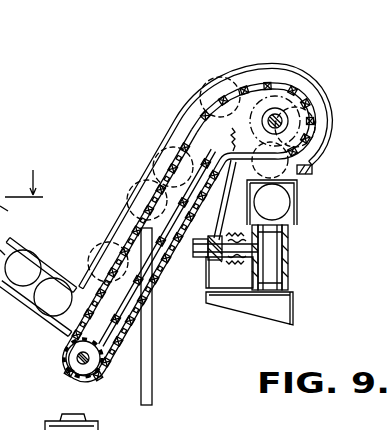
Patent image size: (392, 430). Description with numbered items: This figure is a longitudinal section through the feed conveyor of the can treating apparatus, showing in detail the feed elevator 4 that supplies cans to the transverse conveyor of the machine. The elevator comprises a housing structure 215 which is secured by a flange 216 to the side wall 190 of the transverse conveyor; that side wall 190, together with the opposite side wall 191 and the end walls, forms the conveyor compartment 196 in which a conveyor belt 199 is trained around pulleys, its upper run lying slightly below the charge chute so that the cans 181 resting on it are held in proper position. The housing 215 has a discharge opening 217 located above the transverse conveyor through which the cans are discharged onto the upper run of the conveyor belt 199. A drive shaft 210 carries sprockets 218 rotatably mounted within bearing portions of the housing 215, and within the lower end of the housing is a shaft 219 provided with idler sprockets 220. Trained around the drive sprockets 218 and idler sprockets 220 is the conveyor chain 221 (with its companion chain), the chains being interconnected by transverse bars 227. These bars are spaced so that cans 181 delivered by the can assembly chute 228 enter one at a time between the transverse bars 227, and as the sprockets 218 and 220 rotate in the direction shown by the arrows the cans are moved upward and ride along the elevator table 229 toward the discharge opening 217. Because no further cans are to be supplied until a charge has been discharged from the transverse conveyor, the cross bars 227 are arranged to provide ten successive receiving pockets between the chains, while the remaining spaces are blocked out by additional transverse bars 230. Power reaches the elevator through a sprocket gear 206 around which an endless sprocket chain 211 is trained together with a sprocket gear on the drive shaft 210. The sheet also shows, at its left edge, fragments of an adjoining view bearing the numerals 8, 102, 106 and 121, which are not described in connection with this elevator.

The feed elevator 4 is at (146, 158).
The section arrow 8 is at (25, 182).
The adjacent figure part 102 is at (8, 175).
The adjacent figure part 106 is at (16, 213).
The adjacent figure part 121 is at (12, 240).
The cans 181 is at (282, 203).
The side wall 190 is at (286, 218).
The side wall 191 is at (243, 276).
The conveyor compartment 196 is at (297, 213).
The conveyor belt 199 is at (289, 230).
The sprocket gear 206 is at (225, 241).
The drive shaft 210 is at (289, 118).
The endless sprocket chain 211 is at (231, 200).
The housing structure 215 is at (190, 101).
The flange 216 is at (298, 181).
The discharge opening 217 is at (280, 174).
The sprockets 218 is at (284, 85).
The shaft 219 is at (66, 364).
The idler sprockets 220 is at (77, 357).
The conveyor chain 221 is at (152, 317).
The transverse bars 227 is at (244, 89).
The can assembly chute 228 is at (14, 259).
The elevator table 229 is at (148, 298).
The additional transverse bars 230 is at (184, 253).